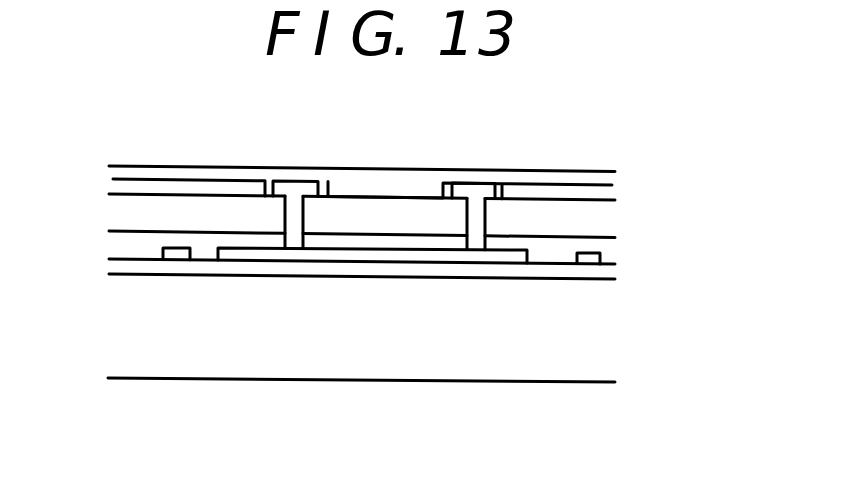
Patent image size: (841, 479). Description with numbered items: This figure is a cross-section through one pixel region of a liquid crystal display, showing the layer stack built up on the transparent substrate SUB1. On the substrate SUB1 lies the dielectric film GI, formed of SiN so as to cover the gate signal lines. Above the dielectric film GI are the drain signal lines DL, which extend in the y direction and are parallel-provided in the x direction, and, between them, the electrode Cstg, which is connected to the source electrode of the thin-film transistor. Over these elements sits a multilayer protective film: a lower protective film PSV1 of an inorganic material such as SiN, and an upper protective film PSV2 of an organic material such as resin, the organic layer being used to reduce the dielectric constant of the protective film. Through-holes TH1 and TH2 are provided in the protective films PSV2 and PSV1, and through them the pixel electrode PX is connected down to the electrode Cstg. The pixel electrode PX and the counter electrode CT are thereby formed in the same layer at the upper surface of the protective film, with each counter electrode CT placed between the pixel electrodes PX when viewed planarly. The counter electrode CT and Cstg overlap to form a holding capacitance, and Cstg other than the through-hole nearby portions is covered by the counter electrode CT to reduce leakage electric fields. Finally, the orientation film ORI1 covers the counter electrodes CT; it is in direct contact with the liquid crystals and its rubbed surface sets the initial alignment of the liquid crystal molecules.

The orientation film ORI1 is at (605, 175).
The counter electrode CT is at (197, 182).
The pixel electrode PX is at (292, 181).
The protective film PSV2 is at (607, 216).
The protective film PSV1 is at (608, 246).
The dielectric film GI is at (608, 272).
The drain signal line DL is at (163, 254).
The transparent substrate SUB1 is at (155, 329).
The through-hole TH1 is at (305, 302).
The through-hole TH2 is at (484, 302).
The holding capacitance electrode Cstg is at (383, 256).